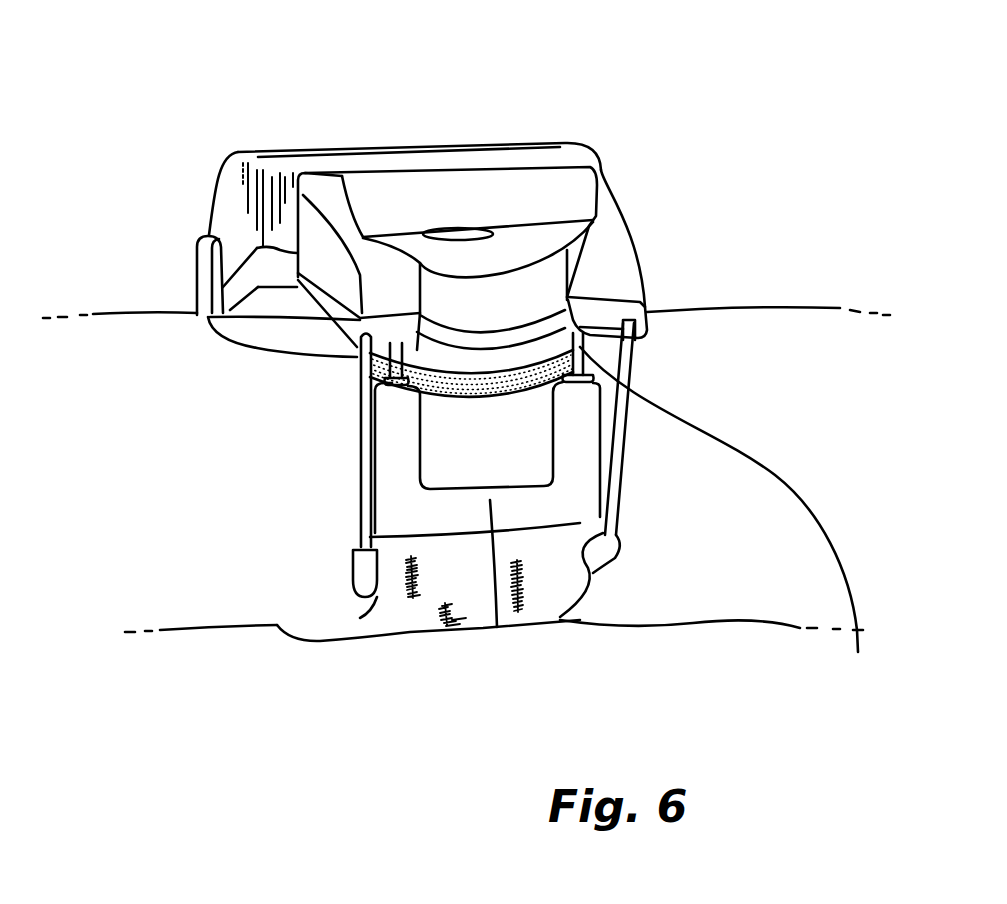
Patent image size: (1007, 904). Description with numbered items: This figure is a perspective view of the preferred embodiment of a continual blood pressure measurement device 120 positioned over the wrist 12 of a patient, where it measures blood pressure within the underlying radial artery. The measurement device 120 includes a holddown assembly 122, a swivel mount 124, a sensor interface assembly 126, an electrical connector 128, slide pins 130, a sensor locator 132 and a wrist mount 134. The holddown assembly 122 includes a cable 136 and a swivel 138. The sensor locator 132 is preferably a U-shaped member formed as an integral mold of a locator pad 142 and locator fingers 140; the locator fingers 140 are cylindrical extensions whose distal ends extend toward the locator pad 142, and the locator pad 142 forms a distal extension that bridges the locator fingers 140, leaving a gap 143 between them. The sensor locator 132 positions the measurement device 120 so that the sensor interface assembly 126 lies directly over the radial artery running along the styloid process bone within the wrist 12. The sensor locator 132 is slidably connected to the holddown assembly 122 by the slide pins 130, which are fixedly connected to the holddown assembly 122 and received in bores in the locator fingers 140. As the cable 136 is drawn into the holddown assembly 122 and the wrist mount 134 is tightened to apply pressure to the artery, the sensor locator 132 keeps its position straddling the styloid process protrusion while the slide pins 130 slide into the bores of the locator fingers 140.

The measurement device 120 is at (330, 43).
The holddown assembly 122 is at (225, 212).
The swivel mount 124 is at (463, 203).
The sensor interface assembly 126 is at (537, 243).
The electrical connector 128 is at (407, 147).
The slide pins 130 is at (210, 307).
The sensor locator 132 is at (298, 436).
The wrist mount 134 is at (422, 653).
The cable 136 is at (766, 645).
The swivel 138 is at (360, 577).
The locator fingers 140 is at (683, 647).
The locator pad 142 is at (598, 650).
The gap 143 is at (517, 660).
The wrist 12 is at (667, 347).